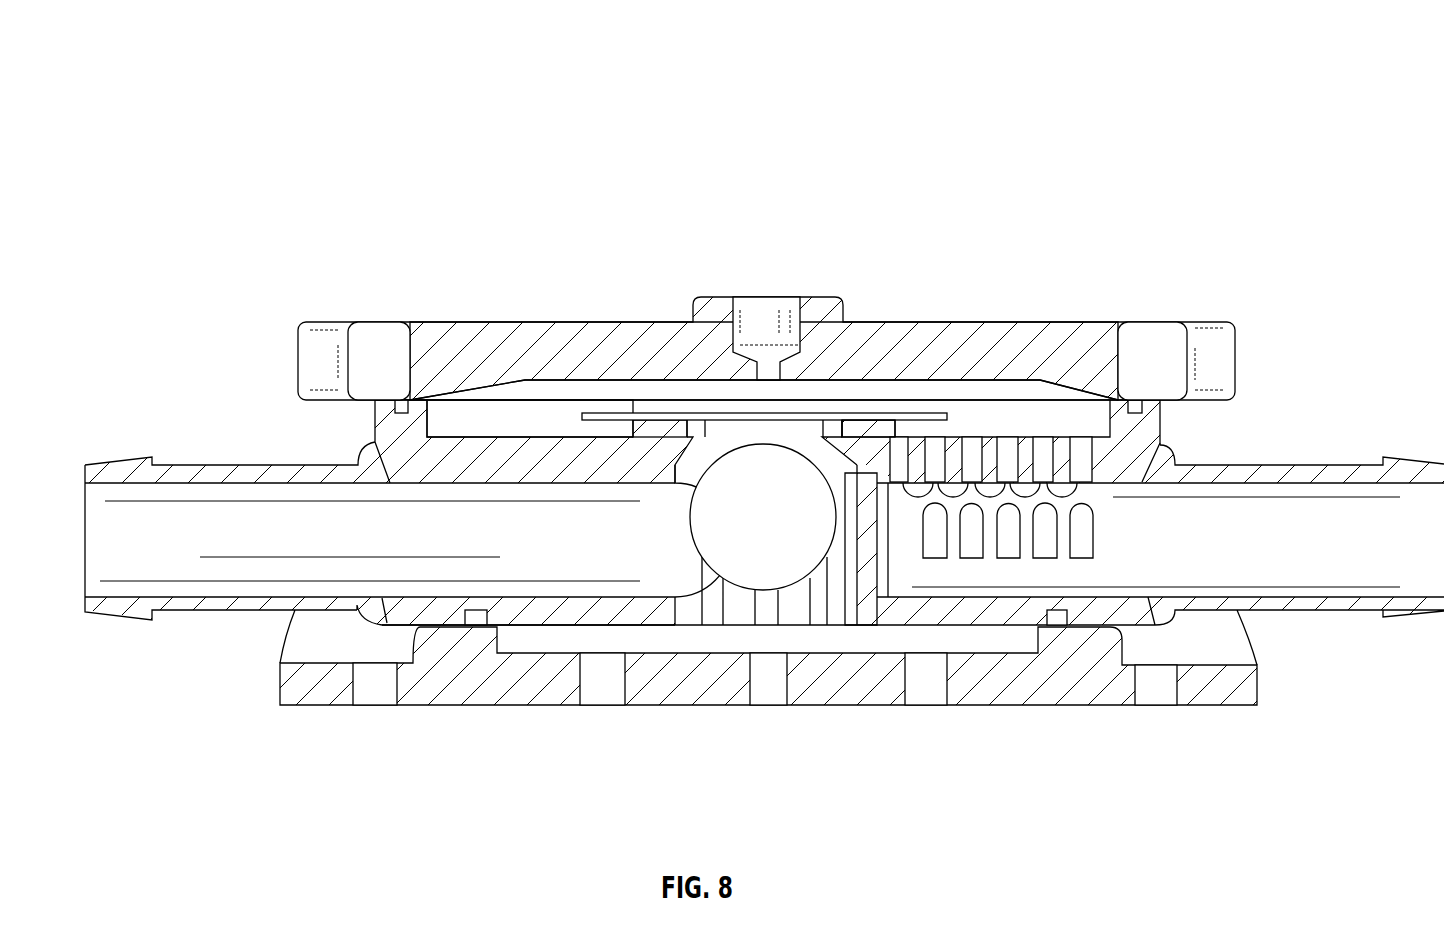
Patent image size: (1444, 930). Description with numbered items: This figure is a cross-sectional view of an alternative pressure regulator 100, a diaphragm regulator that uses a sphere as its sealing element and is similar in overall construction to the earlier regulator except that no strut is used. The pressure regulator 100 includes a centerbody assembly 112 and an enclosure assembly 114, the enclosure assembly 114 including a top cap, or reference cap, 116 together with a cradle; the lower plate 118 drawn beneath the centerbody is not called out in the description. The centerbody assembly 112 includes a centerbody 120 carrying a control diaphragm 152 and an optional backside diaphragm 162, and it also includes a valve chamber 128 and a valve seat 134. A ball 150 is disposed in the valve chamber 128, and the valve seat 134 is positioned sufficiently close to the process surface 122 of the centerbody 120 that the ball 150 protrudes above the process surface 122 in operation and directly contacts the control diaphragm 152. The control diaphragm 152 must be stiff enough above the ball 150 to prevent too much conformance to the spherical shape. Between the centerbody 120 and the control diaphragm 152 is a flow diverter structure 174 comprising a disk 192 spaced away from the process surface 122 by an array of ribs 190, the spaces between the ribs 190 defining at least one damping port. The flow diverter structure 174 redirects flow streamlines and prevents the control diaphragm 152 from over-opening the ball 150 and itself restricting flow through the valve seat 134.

The pressure regulator 100 is at (764, 433).
The centerbody assembly 112 is at (255, 624).
The enclosure assembly 114 is at (777, 267).
The top cap 116 is at (1158, 342).
The base plate 118 is at (1112, 668).
The centerbody 120 is at (1160, 443).
The process surface 122 is at (499, 436).
The valve chamber 128 is at (682, 603).
The valve seat 134 is at (868, 465).
The ball 150 is at (789, 484).
The control diaphragm 152 is at (540, 393).
The backside diaphragm 162 is at (540, 628).
The flow diverter structure 174 is at (619, 414).
The ribs 190 is at (865, 423).
The disk 192 is at (753, 416).